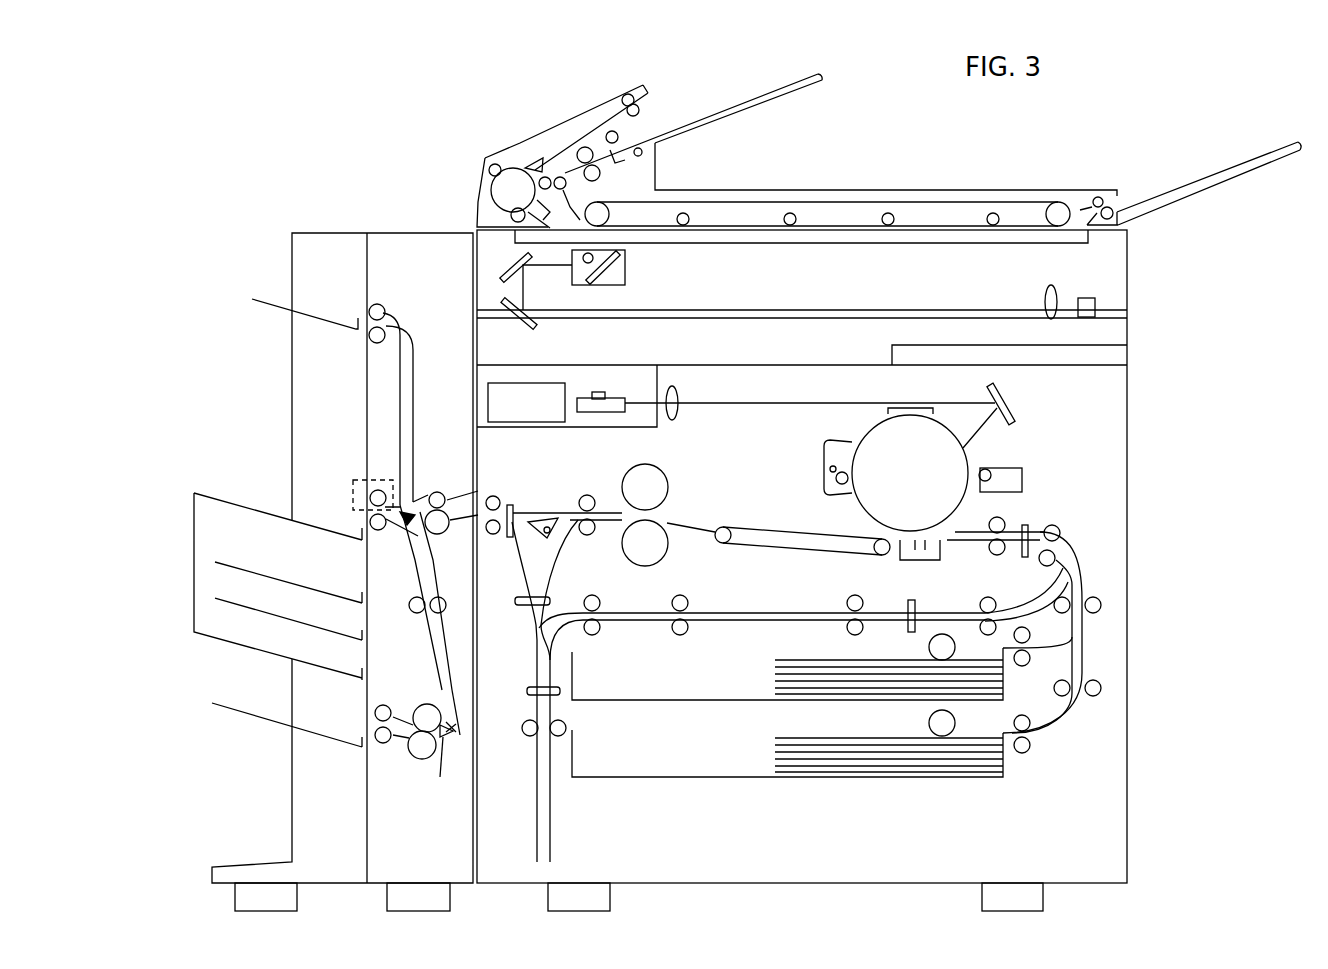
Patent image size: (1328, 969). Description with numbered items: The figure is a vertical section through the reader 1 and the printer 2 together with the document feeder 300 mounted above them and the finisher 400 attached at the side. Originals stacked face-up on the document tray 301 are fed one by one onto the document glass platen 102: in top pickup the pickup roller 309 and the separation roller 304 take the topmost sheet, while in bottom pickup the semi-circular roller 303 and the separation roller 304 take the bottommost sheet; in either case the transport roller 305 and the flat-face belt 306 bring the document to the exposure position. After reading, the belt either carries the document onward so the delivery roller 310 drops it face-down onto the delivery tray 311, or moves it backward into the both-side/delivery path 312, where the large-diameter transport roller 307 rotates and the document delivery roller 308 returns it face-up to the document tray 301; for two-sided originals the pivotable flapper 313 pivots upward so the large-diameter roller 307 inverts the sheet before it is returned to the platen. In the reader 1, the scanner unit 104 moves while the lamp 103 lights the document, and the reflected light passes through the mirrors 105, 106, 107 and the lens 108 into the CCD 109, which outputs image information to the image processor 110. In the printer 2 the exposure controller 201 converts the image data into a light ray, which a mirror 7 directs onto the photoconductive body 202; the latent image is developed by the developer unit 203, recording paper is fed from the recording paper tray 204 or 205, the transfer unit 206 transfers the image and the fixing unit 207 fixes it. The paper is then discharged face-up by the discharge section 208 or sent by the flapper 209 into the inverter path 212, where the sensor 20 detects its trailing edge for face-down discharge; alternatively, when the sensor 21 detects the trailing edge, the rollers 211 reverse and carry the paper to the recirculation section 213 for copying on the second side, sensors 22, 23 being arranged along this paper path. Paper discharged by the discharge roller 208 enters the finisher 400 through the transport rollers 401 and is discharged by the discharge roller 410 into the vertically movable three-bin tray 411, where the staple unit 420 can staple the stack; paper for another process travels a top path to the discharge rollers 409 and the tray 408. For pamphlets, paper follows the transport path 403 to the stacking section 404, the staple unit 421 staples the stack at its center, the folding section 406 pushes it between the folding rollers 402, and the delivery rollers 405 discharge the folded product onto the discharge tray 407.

The reader 1 is at (1130, 268).
The printer 2 is at (1130, 393).
The reflecting mirror 7 is at (1006, 397).
The sensor 20 is at (548, 597).
The sensor 21 is at (573, 683).
The sheet sensor 22 is at (914, 600).
The sheet sensor 23 is at (1024, 560).
The document glass platen 102 is at (744, 244).
The lamp 103 is at (577, 262).
The scanner unit 104 is at (627, 265).
The mirror 105 is at (610, 285).
The mirror 106 is at (500, 275).
The mirror 107 is at (505, 307).
The lens 108 is at (1047, 290).
The charge-coupled device (CCD) 109 is at (1086, 298).
The image processor 110 is at (533, 383).
The exposure controller 201 is at (590, 398).
The photoconductive body 202 is at (868, 440).
The developer unit 203 is at (1012, 468).
The recording paper tray 204 is at (1005, 690).
The recording paper tray 205 is at (1005, 780).
The transfer unit 206 is at (896, 562).
The fixing unit 207 is at (668, 523).
The discharge section 208 is at (495, 495).
The flapper 209 is at (550, 512).
The rollers 211 is at (528, 740).
The inverter path 212 is at (537, 636).
The recirculation section 213 is at (744, 612).
The document feeder 300 is at (858, 200).
The document tray 301 is at (705, 115).
The semi-circular roller 303 is at (645, 152).
The separation roller 304 is at (605, 180).
The transport roller 305 is at (491, 188).
The flat-face belt 306 is at (798, 188).
The large-diameter transport roller 307 is at (512, 170).
The document delivery roller 308 is at (625, 97).
The pickup roller 309 is at (600, 148).
The delivery roller 310 is at (1096, 198).
The delivery tray 311 is at (1178, 200).
The both-side/delivery path 312 is at (503, 200).
The pivotable flapper 313 is at (527, 166).
The finisher 400 is at (320, 232).
The transport rollers 401 is at (433, 490).
The folding rollers 402 is at (418, 750).
The transport path 403 is at (432, 657).
The stacking section 404 is at (440, 777).
The delivery rollers 405 is at (386, 705).
The folding section 406 is at (462, 738).
The discharge tray 407 is at (314, 731).
The tray 408 is at (324, 322).
The discharge rollers 409 is at (369, 343).
The discharge roller 410 is at (383, 531).
The three-bin tray 411 is at (245, 493).
The staple unit 420 is at (357, 485).
The staple unit 421 is at (458, 726).